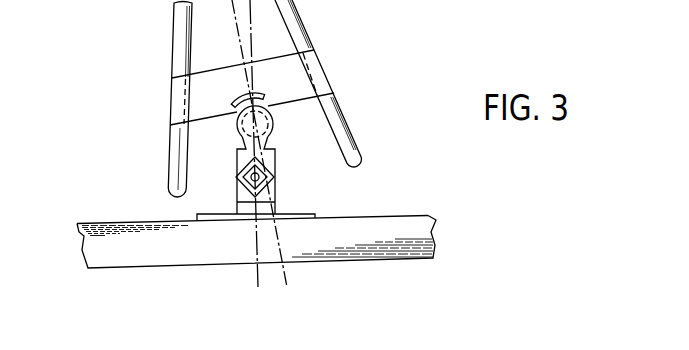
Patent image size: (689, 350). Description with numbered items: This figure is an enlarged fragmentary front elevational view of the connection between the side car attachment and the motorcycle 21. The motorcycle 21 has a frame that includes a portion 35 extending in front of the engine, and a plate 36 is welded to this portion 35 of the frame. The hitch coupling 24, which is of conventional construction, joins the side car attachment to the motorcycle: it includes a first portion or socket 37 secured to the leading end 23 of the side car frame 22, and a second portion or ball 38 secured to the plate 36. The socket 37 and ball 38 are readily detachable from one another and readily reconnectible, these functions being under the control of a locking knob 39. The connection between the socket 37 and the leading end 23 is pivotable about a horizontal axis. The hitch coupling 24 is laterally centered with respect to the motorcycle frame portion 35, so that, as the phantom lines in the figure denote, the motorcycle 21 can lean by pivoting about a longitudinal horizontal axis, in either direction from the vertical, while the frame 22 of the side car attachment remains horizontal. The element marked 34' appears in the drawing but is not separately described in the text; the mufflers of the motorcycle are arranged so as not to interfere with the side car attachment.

The motorcycle 21 is at (330, 74).
The frame 22 is at (148, 223).
The leading end 23 is at (369, 226).
The hitch coupling 24 is at (238, 133).
The tubular leg 34' is at (135, 98).
The frame portion 35 is at (352, 110).
The plate 36 is at (207, 80).
The socket 37 is at (237, 150).
The ball 38 is at (233, 108).
The locking knob 39 is at (277, 188).